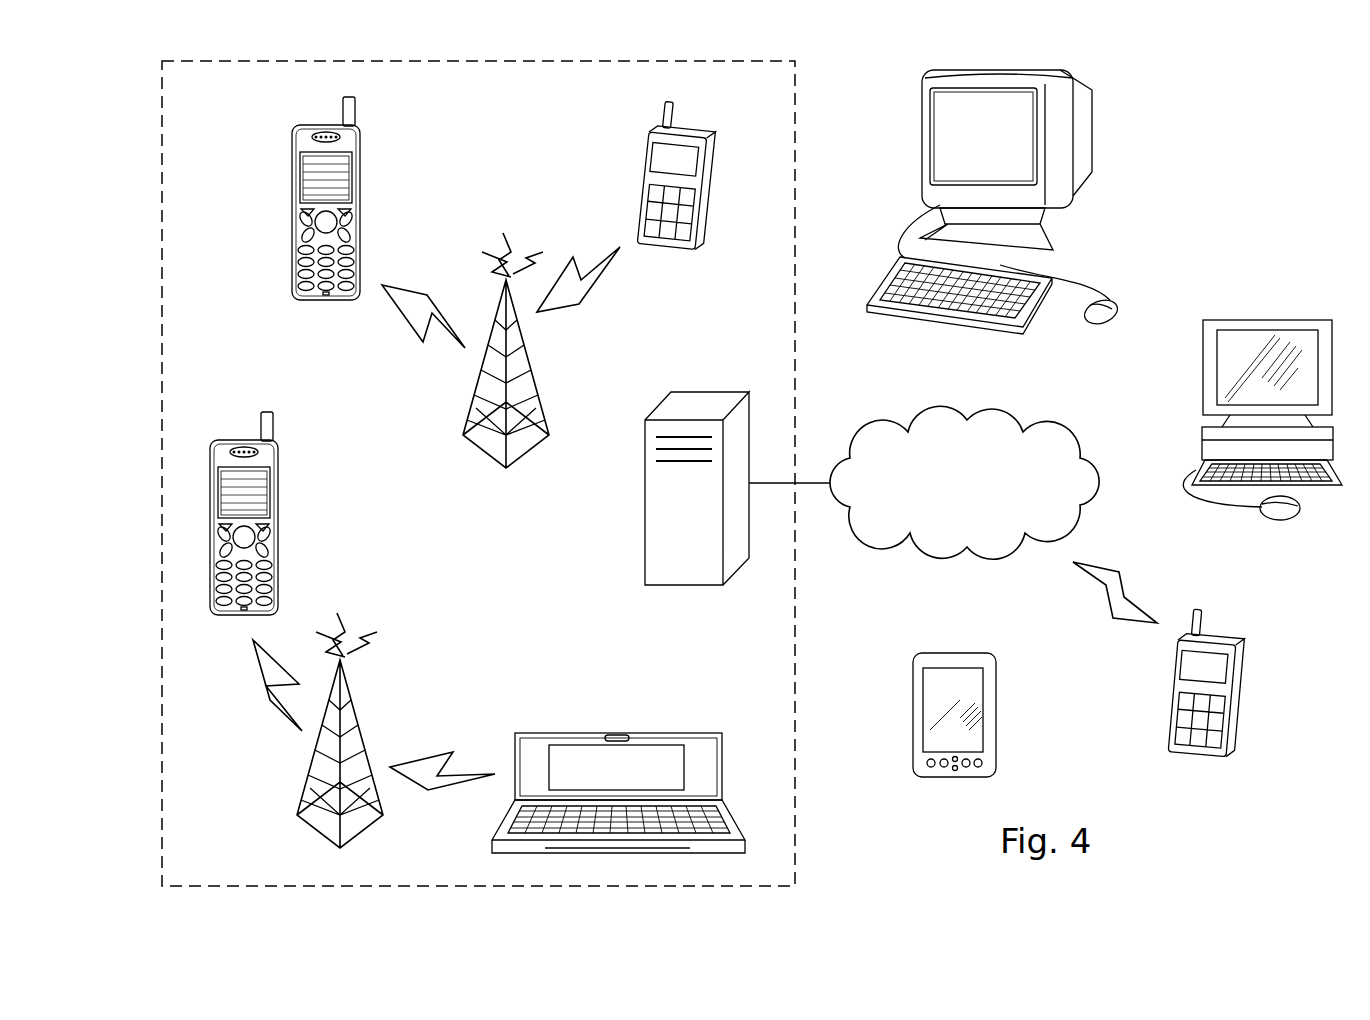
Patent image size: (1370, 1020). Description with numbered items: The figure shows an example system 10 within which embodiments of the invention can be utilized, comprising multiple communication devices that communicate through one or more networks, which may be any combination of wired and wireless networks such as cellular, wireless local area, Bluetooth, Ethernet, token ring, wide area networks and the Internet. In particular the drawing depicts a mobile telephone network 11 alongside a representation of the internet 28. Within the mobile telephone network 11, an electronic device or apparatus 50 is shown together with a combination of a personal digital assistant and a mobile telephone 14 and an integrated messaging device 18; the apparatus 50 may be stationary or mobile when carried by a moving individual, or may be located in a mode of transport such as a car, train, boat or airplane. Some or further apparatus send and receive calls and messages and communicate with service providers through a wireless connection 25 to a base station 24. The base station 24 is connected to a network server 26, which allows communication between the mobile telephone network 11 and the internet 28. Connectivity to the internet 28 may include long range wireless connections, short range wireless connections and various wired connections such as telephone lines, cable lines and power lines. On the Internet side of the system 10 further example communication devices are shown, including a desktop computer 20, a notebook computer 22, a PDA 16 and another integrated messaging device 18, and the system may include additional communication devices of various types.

The system 10 is at (1314, 596).
The mobile telephone network 11 is at (209, 105).
The combination of a personal digital assistant (PDA) and a mobile telephone 14 is at (597, 733).
The PDA 16 is at (997, 711).
The integrated messaging device (IMD) 18 is at (647, 190).
The desktop computer 20 is at (1095, 135).
The notebook computer 22 is at (1264, 318).
The base station 24 is at (530, 356).
The wireless connection 25 is at (270, 703).
The network server 26 is at (645, 495).
The internet 28 is at (877, 429).
The electronic device or apparatus 50 is at (360, 207).